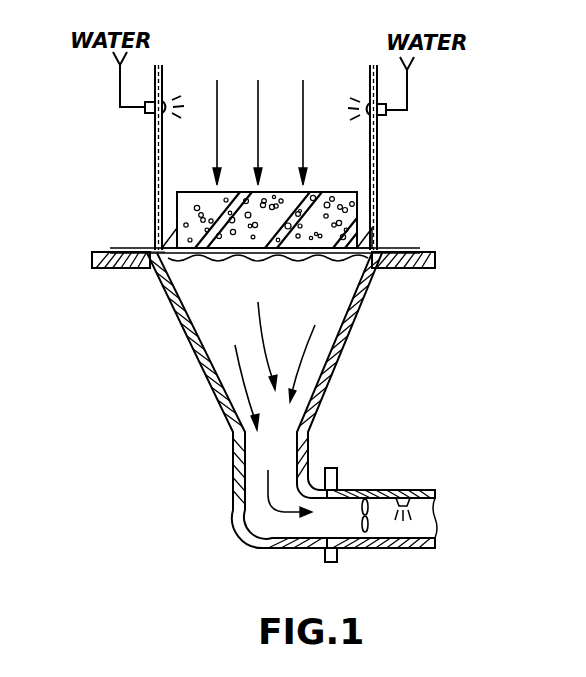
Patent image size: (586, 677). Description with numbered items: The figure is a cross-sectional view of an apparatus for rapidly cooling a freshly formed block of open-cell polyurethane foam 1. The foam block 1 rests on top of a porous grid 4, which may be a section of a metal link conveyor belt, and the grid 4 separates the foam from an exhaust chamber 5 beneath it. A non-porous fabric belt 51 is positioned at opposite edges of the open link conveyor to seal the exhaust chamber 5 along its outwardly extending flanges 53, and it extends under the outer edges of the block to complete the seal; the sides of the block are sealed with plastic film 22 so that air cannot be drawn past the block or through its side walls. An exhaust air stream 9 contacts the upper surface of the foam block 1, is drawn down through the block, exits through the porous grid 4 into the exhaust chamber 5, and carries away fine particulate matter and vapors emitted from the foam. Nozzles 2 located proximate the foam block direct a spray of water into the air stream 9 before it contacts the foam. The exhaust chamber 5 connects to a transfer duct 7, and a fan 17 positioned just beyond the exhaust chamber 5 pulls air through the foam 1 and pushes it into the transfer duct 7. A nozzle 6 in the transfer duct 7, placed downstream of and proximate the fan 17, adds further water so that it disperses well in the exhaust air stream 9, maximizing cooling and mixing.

The block of open-cell polyurethane foam 1 is at (240, 196).
The nozzles 2 is at (169, 98).
The porous grid 4 is at (195, 260).
The exhaust chamber 5 is at (340, 356).
The nozzle 6 is at (405, 494).
The transfer duct 7 is at (370, 489).
The exhaust air stream 9 is at (260, 95).
The fan 17 is at (372, 532).
The plastic film 22 is at (172, 224).
The non-porous fabric belt 51 is at (118, 249).
The outwardly extending flanges 53 is at (106, 268).